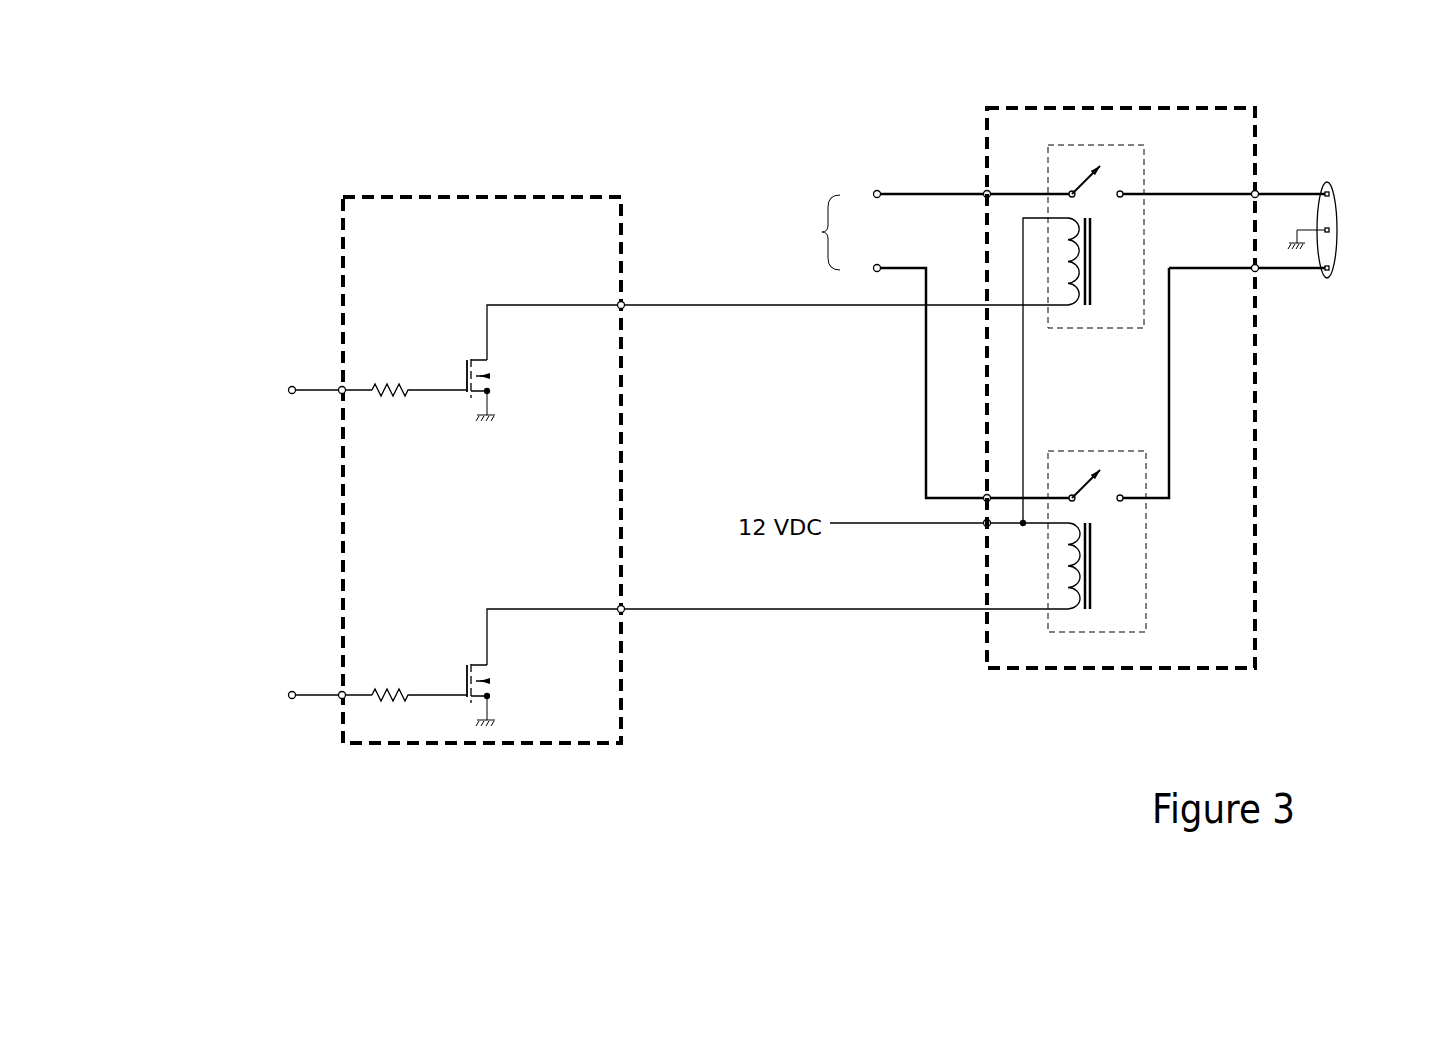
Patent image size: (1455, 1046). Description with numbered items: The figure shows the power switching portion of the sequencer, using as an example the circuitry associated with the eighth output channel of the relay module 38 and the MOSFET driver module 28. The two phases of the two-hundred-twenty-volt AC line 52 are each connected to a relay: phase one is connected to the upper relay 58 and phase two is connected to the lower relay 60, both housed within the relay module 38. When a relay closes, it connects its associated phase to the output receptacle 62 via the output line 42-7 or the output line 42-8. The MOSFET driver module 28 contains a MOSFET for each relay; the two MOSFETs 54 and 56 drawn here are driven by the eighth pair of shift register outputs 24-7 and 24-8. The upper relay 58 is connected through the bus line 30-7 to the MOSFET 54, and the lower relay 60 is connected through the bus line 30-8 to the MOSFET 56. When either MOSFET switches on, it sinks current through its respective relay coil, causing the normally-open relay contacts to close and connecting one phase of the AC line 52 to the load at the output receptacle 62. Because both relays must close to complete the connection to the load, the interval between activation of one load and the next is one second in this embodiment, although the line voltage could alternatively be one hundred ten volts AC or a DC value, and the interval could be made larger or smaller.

The MOSFET driver module 28 is at (465, 195).
The 220 VAC line 52 is at (816, 218).
The relay module 38 is at (1073, 108).
The upper relay 58 is at (1147, 230).
The lower relay 60 is at (1148, 572).
The output line 42-7 is at (1268, 194).
The output line 42-8 is at (1265, 271).
The output receptacle 62 is at (1347, 213).
The shift register output 24-7 is at (280, 389).
The shift register output 24-8 is at (282, 694).
The MOSFET 54 is at (500, 378).
The MOSFET 56 is at (500, 683).
The bus line 30-7 is at (705, 307).
The bus line 30-8 is at (705, 611).